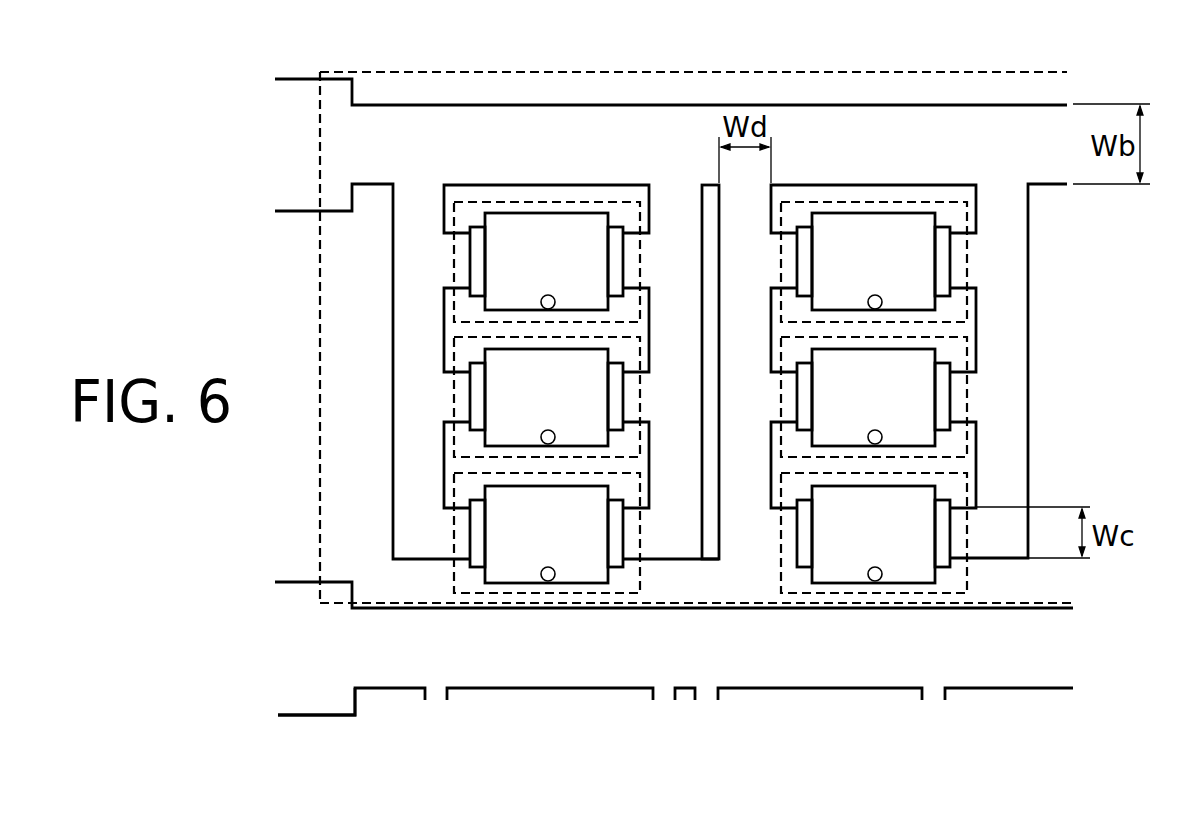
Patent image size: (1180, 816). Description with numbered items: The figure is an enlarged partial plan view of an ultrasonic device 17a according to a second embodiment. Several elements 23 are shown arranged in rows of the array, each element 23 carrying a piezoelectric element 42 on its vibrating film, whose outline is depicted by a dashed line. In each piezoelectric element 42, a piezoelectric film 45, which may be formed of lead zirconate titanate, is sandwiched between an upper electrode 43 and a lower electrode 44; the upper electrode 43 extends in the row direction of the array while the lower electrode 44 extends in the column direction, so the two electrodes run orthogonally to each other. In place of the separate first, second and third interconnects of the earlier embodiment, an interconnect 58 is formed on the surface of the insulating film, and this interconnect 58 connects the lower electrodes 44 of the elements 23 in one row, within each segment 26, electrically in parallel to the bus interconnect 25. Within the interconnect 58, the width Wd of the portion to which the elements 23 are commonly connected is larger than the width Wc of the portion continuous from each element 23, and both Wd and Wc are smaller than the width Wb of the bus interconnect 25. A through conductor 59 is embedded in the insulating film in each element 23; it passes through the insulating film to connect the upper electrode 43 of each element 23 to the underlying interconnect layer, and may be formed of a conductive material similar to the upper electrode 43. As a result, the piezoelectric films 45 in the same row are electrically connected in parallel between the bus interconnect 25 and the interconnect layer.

The ultrasonic device 17a is at (325, 727).
The element 23 is at (473, 196).
The bus interconnect 25 is at (432, 103).
The segment 26 is at (623, 72).
The piezoelectric element 42 is at (555, 208).
The upper electrode 43 is at (532, 222).
The lower electrode 44 is at (461, 233).
The piezoelectric film 45 is at (617, 228).
The interconnect 58 is at (403, 296).
The through conductor 59 is at (555, 299).